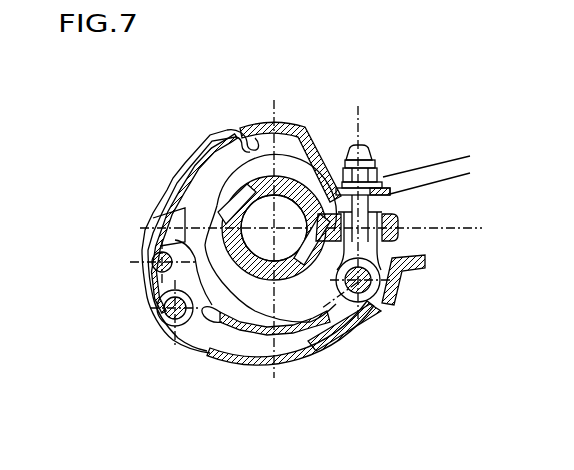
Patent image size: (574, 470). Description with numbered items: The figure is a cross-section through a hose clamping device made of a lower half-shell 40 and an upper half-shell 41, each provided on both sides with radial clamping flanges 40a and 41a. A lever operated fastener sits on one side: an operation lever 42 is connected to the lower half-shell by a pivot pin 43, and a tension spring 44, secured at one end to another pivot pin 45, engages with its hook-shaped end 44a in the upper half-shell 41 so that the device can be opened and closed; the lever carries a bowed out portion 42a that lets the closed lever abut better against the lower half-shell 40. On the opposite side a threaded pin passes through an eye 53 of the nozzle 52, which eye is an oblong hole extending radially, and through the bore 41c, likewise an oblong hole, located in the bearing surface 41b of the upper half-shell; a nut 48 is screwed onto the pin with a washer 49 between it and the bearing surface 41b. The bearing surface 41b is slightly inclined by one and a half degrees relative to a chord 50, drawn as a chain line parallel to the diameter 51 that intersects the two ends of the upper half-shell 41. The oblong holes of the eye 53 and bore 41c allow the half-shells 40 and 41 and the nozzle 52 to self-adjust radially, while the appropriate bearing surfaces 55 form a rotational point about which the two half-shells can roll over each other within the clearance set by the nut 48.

The lower half-shell 40 is at (262, 324).
The radial clamping flange 40a is at (293, 298).
The upper half-shell 41 is at (202, 157).
The radial clamping flange 41a is at (310, 160).
The bearing surface 41b is at (413, 183).
The bore 41c is at (442, 183).
The operation lever 42 is at (230, 358).
The bowed out portion 42a is at (380, 333).
The pivot pin 43 is at (150, 263).
The tension spring 44 is at (172, 188).
The hook-shaped end 44a is at (247, 128).
The pivot pin 45 is at (165, 315).
The nut 48 is at (366, 158).
The washer 49 is at (385, 185).
The chord 50 is at (392, 198).
The diameter 51 is at (400, 228).
The nozzle 52 is at (283, 185).
The eye 53 is at (398, 237).
The bearing surfaces 55 is at (167, 265).